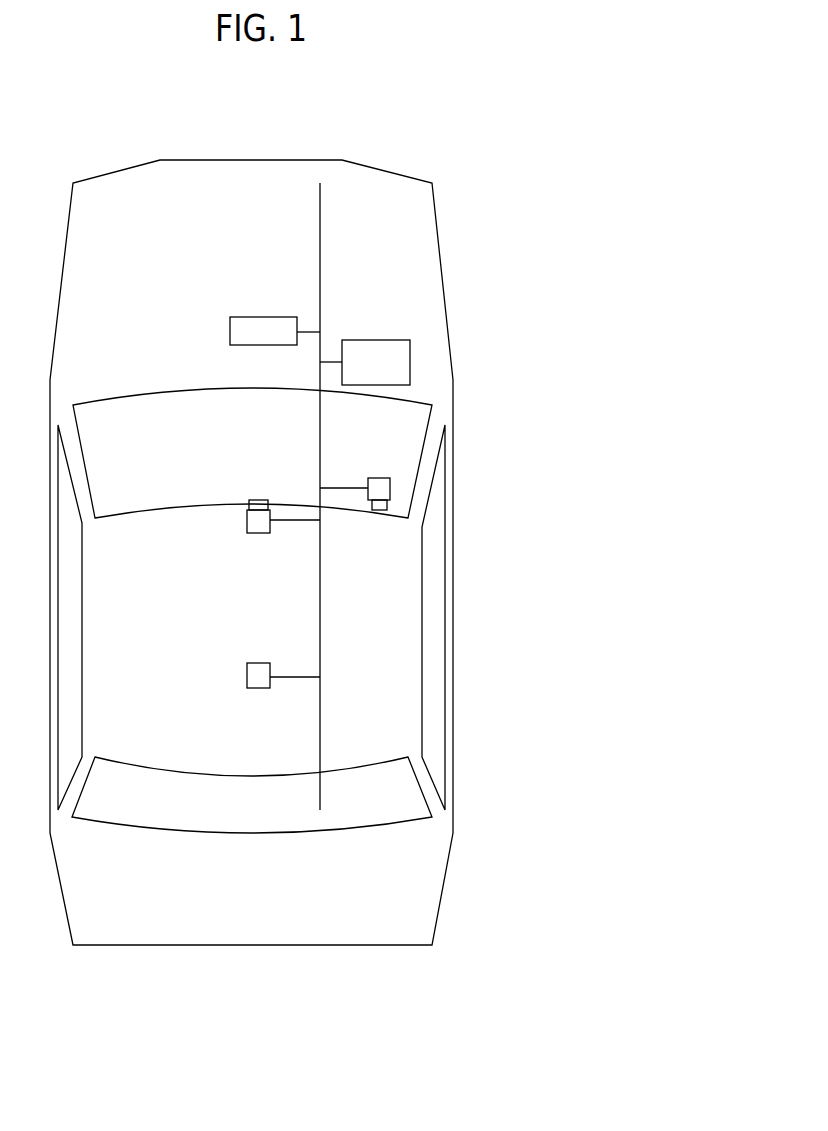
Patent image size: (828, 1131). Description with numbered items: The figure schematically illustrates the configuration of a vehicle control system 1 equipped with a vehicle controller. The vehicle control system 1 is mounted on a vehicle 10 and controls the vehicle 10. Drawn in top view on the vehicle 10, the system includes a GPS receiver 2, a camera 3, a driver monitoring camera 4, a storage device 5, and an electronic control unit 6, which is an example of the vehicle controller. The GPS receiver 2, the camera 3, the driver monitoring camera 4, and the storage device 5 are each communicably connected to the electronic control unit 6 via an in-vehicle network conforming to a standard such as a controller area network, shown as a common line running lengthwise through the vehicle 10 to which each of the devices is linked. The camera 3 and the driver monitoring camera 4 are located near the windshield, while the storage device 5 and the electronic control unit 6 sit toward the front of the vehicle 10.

The vehicle control system 1 is at (374, 552).
The vehicle 10 is at (453, 817).
The GPS receiver 2 is at (247, 680).
The camera 3 is at (247, 525).
The driver monitoring camera 4 is at (390, 489).
The storage device 5 is at (230, 331).
The electronic control unit 6 is at (410, 360).